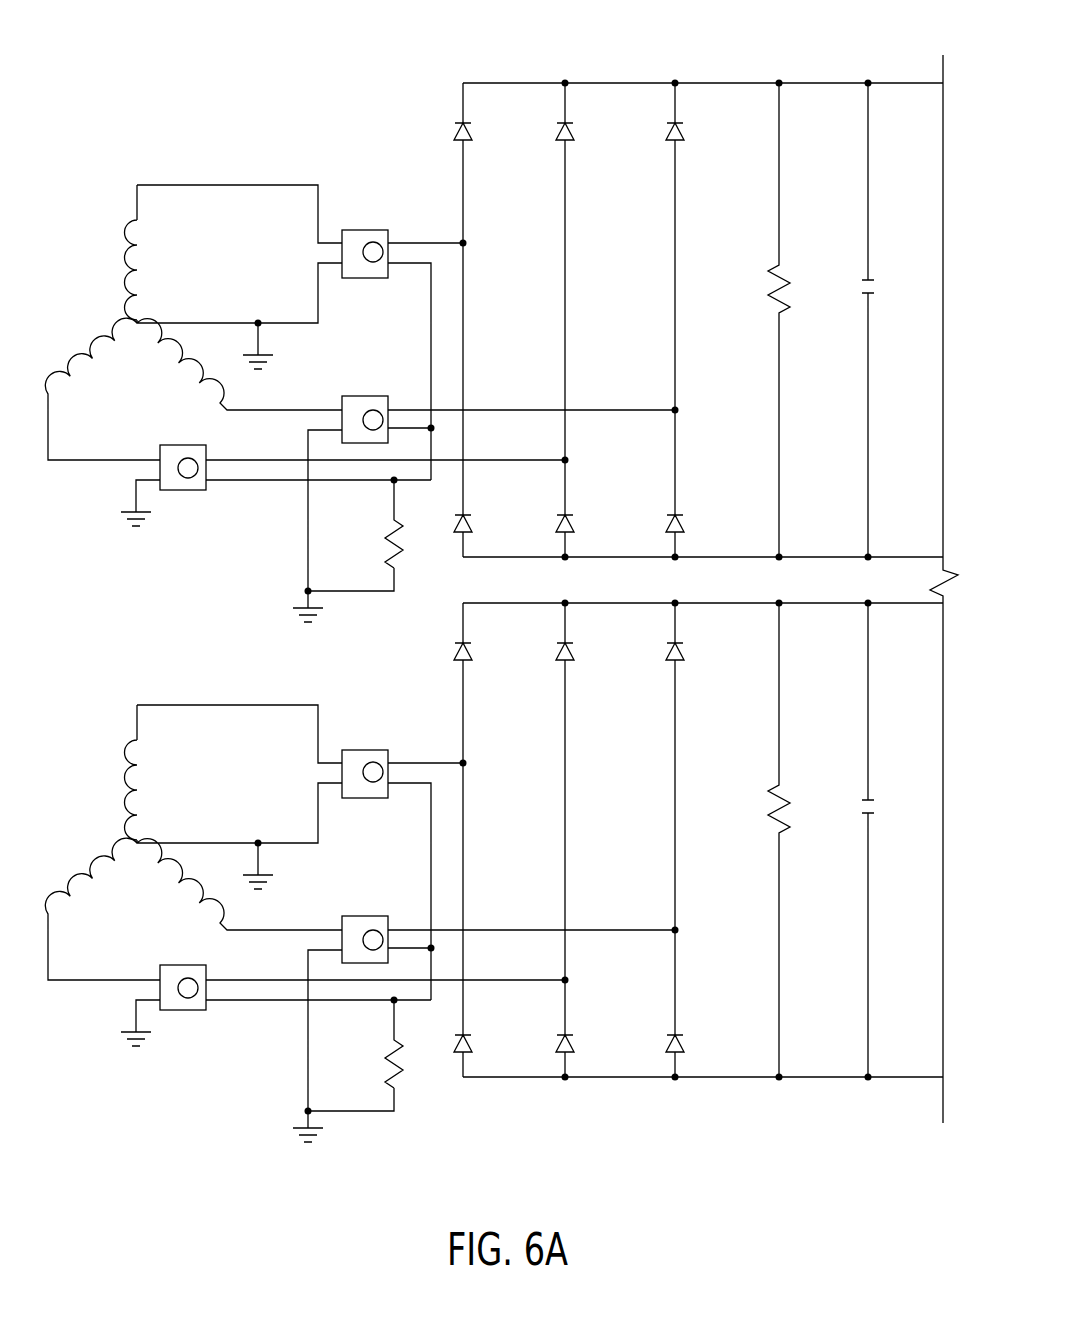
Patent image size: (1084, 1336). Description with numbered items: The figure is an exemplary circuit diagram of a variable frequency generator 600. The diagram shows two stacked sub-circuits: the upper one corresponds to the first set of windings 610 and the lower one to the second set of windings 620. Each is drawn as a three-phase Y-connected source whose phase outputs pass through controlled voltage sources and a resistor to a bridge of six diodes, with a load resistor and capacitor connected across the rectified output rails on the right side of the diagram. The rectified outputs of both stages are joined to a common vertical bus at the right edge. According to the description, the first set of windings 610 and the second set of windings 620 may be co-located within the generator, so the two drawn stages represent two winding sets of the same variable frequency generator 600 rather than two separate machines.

The variable frequency generator 600 is at (137, 43).
The first set of windings 610 is at (225, 155).
The second set of windings 620 is at (225, 675).